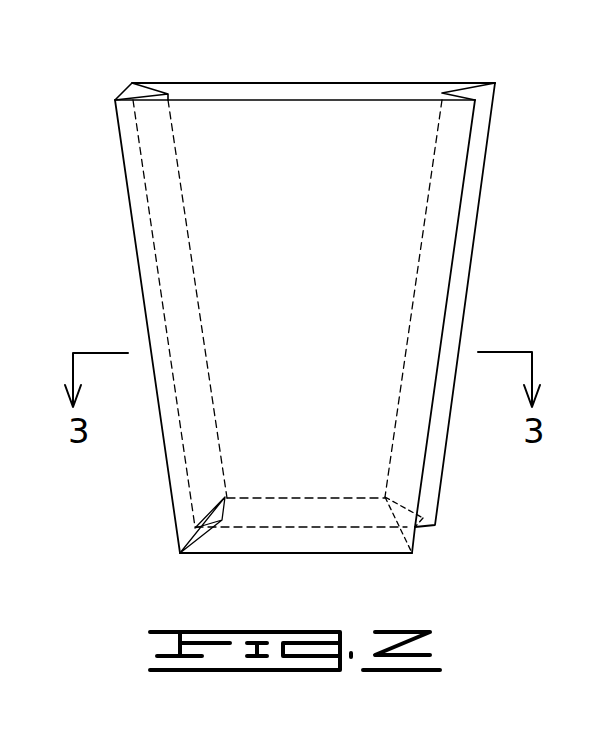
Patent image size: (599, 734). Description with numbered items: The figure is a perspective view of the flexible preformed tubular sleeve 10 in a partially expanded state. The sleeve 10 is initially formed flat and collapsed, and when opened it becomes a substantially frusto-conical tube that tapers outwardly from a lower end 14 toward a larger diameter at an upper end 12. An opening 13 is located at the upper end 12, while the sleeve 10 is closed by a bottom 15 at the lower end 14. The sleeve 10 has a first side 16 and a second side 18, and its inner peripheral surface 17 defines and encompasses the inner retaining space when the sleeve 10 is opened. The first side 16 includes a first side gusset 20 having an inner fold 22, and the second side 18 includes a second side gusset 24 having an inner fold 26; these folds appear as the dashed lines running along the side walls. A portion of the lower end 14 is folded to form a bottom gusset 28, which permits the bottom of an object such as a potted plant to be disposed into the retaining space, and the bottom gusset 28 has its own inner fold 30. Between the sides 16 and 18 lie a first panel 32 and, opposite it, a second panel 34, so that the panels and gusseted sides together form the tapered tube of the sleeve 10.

The flexible preformed tubular sleeve 10 is at (293, 317).
The upper end 12 is at (350, 82).
The opening 13 is at (283, 90).
The lower end 14 is at (235, 555).
The bottom 15 is at (309, 512).
The first side 16 is at (135, 240).
The inner peripheral surface 17 is at (398, 90).
The second side 18 is at (477, 222).
The first side gusset 20 is at (130, 90).
The inner fold 22 is at (192, 282).
The second side gusset 24 is at (478, 135).
The inner fold 26 is at (415, 278).
The bottom gusset 28 is at (417, 537).
The inner fold 30 is at (257, 493).
The first panel 32 is at (197, 148).
The second panel 34 is at (238, 82).